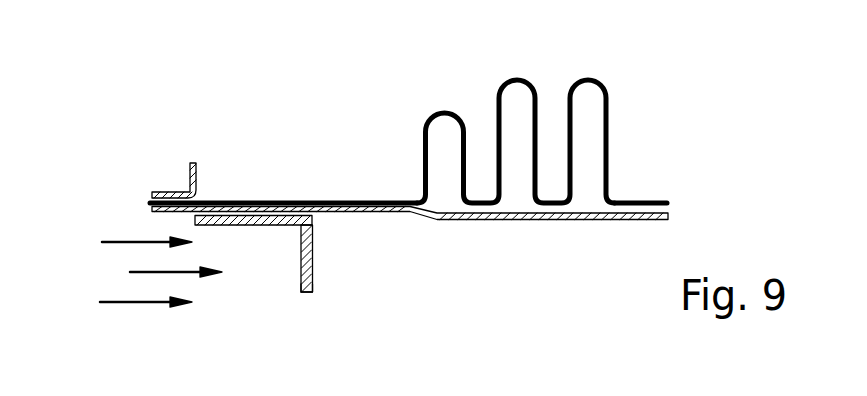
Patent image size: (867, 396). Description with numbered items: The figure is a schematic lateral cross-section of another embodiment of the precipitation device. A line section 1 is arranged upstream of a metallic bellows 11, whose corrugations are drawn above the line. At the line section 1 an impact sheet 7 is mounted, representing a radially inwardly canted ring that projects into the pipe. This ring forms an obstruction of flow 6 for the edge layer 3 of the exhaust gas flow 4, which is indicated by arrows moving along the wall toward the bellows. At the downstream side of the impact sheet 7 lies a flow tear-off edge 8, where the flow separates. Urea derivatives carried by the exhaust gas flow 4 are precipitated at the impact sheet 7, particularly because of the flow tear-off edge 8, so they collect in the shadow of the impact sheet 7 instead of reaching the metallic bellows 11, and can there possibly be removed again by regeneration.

The line section 1 is at (327, 201).
The edge layer 3 is at (102, 242).
The exhaust gas flow 4 is at (130, 244).
The obstruction of flow 6 is at (258, 216).
The impact sheet 7 is at (313, 263).
The flow tear-off edge 8 is at (305, 293).
The metallic bellows 11 is at (515, 79).